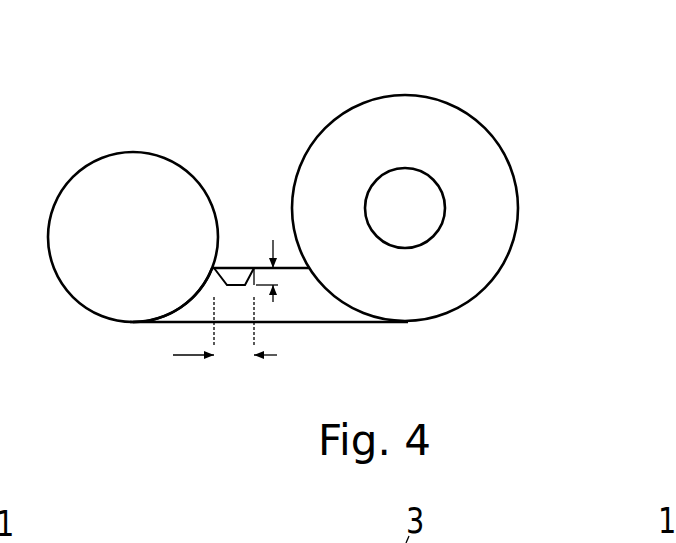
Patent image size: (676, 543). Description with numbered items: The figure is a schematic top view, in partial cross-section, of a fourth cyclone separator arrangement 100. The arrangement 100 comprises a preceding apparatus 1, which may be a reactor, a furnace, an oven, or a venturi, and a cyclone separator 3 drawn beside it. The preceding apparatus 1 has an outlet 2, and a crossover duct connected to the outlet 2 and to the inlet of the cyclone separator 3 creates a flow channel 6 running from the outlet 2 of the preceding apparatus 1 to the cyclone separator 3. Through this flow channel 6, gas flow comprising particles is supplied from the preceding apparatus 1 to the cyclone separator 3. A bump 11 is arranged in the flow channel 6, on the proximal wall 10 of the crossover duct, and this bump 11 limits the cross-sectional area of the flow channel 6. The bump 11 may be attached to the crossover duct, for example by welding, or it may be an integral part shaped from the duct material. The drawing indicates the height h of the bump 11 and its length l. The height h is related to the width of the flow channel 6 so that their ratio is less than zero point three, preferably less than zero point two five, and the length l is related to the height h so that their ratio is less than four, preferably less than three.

The cyclone separator arrangement 100 is at (178, 93).
The preceding apparatus 1 is at (115, 195).
The outlet 2 is at (173, 283).
The cyclone separator 3 is at (358, 132).
The flow channel 6 is at (312, 312).
The proximal wall 10 is at (287, 268).
The bump 11 is at (233, 280).
The height h is at (285, 279).
The length l is at (225, 335).